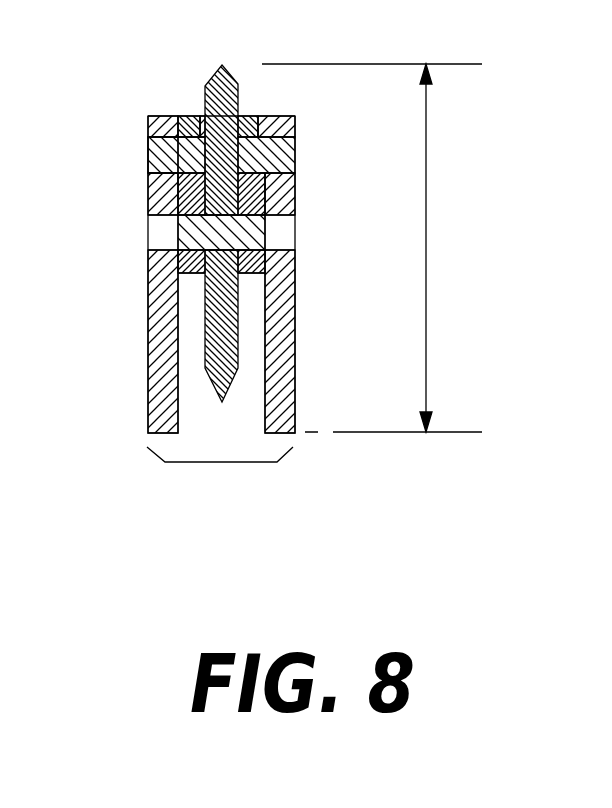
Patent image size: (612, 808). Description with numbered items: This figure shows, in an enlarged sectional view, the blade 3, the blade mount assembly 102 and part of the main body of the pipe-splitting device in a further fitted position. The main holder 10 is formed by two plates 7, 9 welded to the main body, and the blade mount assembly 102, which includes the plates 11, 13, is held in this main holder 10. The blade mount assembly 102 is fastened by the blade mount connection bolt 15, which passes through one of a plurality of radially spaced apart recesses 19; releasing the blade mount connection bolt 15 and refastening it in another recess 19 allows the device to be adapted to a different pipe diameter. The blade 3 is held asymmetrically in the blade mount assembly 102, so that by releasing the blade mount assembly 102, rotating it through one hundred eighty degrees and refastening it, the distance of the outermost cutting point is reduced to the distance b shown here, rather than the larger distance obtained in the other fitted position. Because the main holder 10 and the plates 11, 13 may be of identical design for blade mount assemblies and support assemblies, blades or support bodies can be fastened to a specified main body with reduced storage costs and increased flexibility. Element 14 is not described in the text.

The blade 3 is at (212, 83).
The plate 7 is at (287, 316).
The plate 9 is at (163, 300).
The main holder 10 is at (218, 462).
The plate 11 is at (296, 117).
The plate 13 is at (187, 118).
The support plate 14 is at (296, 156).
The blade mount connection bolt 15 is at (160, 152).
The recess 19 is at (296, 207).
The blade mount assembly 102 is at (185, 188).
The distance b is at (426, 332).